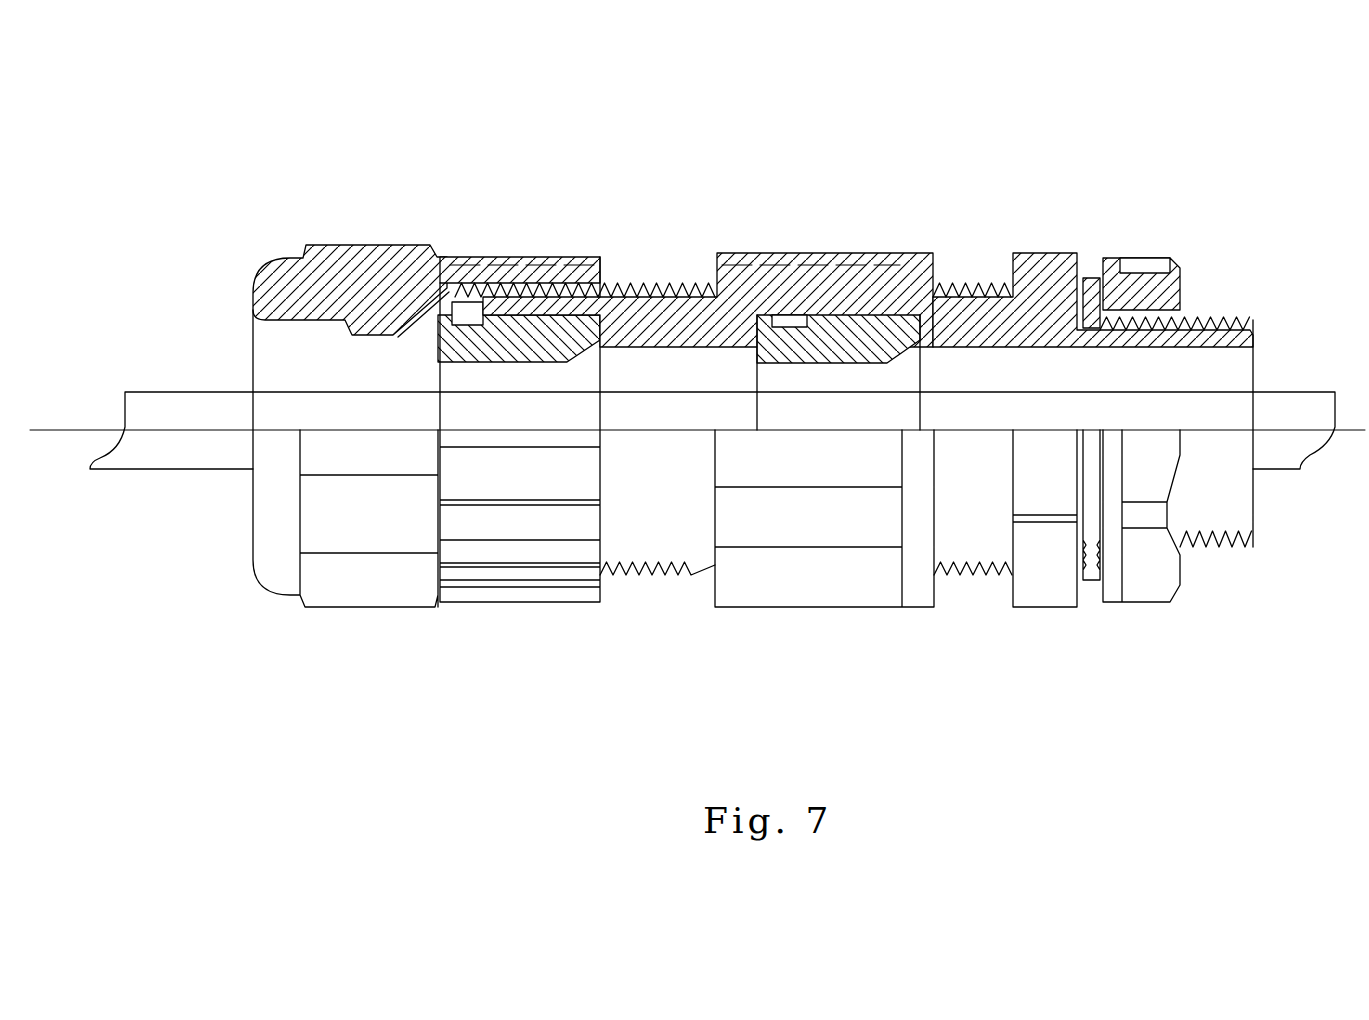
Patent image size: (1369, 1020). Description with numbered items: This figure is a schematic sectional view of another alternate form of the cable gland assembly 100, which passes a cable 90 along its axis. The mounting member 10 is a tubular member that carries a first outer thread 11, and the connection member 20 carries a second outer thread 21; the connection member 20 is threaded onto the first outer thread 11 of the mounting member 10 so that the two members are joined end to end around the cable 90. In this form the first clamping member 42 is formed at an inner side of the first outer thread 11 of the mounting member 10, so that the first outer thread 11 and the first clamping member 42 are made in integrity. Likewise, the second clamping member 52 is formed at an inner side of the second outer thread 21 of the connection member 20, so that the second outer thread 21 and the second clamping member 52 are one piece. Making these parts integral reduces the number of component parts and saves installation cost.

The cable gland assembly 100 is at (547, 117).
The mounting member 10 is at (1093, 375).
The first outer thread 11 is at (956, 297).
The connection member 20 is at (694, 377).
The second outer thread 21 is at (657, 290).
The first clamping member 42 is at (770, 312).
The second clamping member 52 is at (457, 313).
The cable 90 is at (208, 410).